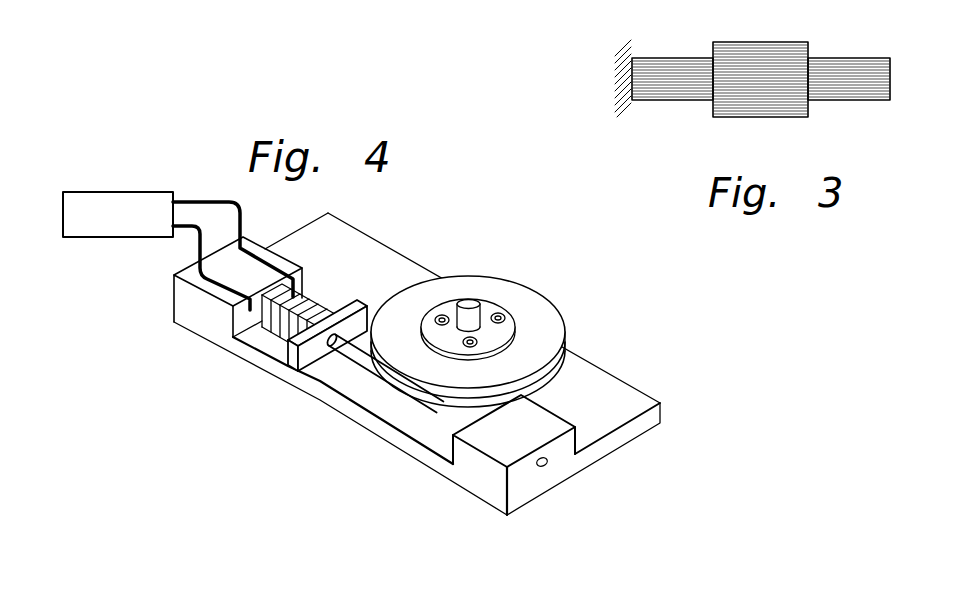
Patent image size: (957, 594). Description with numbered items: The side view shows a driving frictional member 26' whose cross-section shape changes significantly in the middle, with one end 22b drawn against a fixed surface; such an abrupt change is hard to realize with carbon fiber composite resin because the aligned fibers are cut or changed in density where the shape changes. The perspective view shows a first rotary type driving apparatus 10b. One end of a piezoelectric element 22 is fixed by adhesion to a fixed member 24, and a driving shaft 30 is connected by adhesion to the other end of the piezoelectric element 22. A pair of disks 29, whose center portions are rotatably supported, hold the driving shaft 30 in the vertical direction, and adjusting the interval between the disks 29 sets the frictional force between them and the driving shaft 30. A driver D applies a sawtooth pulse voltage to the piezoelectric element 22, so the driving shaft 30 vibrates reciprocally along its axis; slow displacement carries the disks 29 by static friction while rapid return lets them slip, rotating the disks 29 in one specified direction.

In FIG. 3, the fixed end of shaft 22b is at (630, 100).
In FIG. 3, the driving frictional member 26' is at (801, 60).
In FIG. 4, the driving apparatus 10b is at (167, 371).
In FIG. 4, the piezoelectric element 22 is at (278, 333).
In FIG. 4, the fixed member 24 is at (442, 282).
In FIG. 4, the disks 29 is at (552, 316).
In FIG. 4, the driving shaft 30 is at (355, 358).